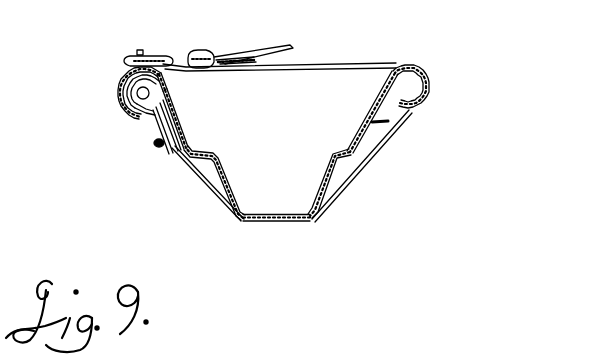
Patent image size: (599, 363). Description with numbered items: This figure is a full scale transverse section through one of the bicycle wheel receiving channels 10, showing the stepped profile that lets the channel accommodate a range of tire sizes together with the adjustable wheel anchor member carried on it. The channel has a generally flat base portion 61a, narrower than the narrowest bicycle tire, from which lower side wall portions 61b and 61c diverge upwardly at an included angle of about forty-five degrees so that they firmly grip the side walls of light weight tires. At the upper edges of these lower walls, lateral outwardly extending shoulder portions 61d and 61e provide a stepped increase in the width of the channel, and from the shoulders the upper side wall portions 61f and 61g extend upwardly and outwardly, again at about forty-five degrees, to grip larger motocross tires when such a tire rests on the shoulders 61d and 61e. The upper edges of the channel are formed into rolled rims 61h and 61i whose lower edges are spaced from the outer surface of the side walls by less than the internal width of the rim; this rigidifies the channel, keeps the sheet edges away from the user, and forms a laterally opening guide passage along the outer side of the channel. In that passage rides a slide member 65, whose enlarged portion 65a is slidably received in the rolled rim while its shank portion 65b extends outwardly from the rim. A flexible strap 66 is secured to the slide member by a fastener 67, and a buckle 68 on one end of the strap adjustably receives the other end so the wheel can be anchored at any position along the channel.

The wheel channel 10 is at (396, 120).
The base portion 61a is at (268, 220).
The lower side wall portion 61b is at (334, 190).
The lower side wall portion 61c is at (226, 190).
The shoulder portion 61d is at (350, 157).
The shoulder portion 61e is at (196, 165).
The upper side wall portion 61f is at (390, 80).
The upper side wall portion 61g is at (176, 104).
The rolled rim 61h is at (425, 76).
The rolled rim 61i is at (121, 76).
The slide member 65 is at (146, 128).
The enlarged portion 65a is at (126, 102).
The shank portion 65b is at (176, 112).
The flexible strap 66 is at (198, 182).
The fastener 67 is at (155, 146).
The buckle 68 is at (179, 62).